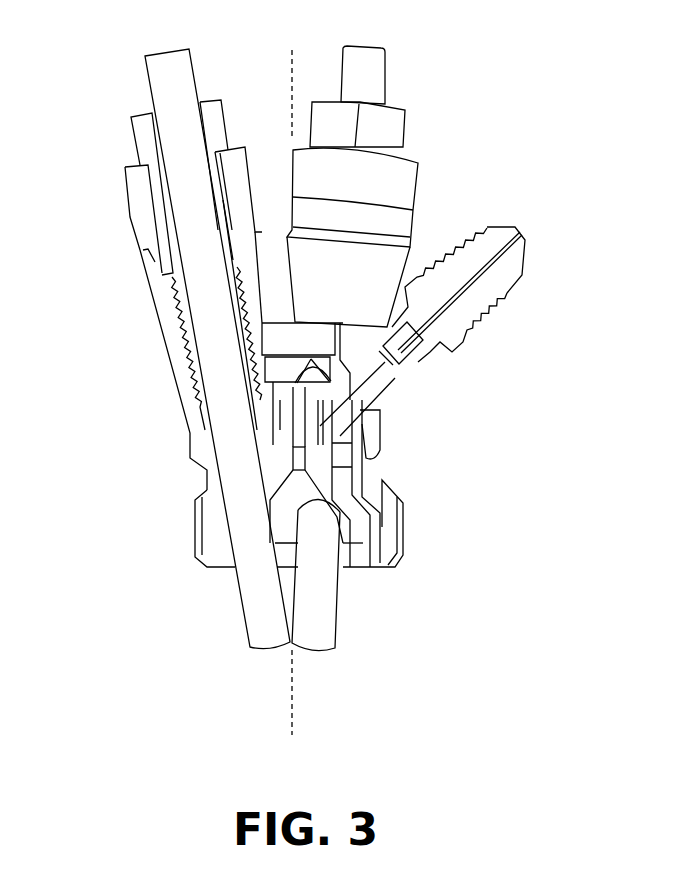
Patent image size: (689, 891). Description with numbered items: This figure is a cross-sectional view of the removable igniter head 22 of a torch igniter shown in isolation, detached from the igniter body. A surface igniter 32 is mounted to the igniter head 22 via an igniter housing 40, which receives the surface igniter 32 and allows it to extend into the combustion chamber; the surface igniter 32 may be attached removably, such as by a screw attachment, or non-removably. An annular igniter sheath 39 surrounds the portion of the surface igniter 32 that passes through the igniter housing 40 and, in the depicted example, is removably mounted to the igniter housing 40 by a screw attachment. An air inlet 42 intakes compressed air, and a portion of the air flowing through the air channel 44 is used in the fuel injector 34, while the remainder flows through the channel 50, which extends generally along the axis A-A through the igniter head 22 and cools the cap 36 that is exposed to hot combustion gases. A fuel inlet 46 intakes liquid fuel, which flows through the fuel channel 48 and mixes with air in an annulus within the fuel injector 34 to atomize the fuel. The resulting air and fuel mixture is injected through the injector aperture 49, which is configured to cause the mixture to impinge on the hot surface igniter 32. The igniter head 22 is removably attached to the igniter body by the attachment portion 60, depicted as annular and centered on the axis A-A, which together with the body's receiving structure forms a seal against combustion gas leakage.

The igniter head 22 is at (90, 217).
The surface igniter 32 is at (160, 52).
The fuel injector 34 is at (265, 410).
The cap 36 is at (280, 475).
The igniter sheath 39 is at (143, 115).
The igniter housing 40 is at (147, 283).
The air inlet 42 is at (271, 350).
The air channel 44 is at (360, 330).
The fuel inlet 46 is at (487, 227).
The fuel channel 48 is at (425, 353).
The injector aperture 49 is at (313, 452).
The cooling channel 50 is at (377, 567).
The attachment portion 60 is at (193, 520).